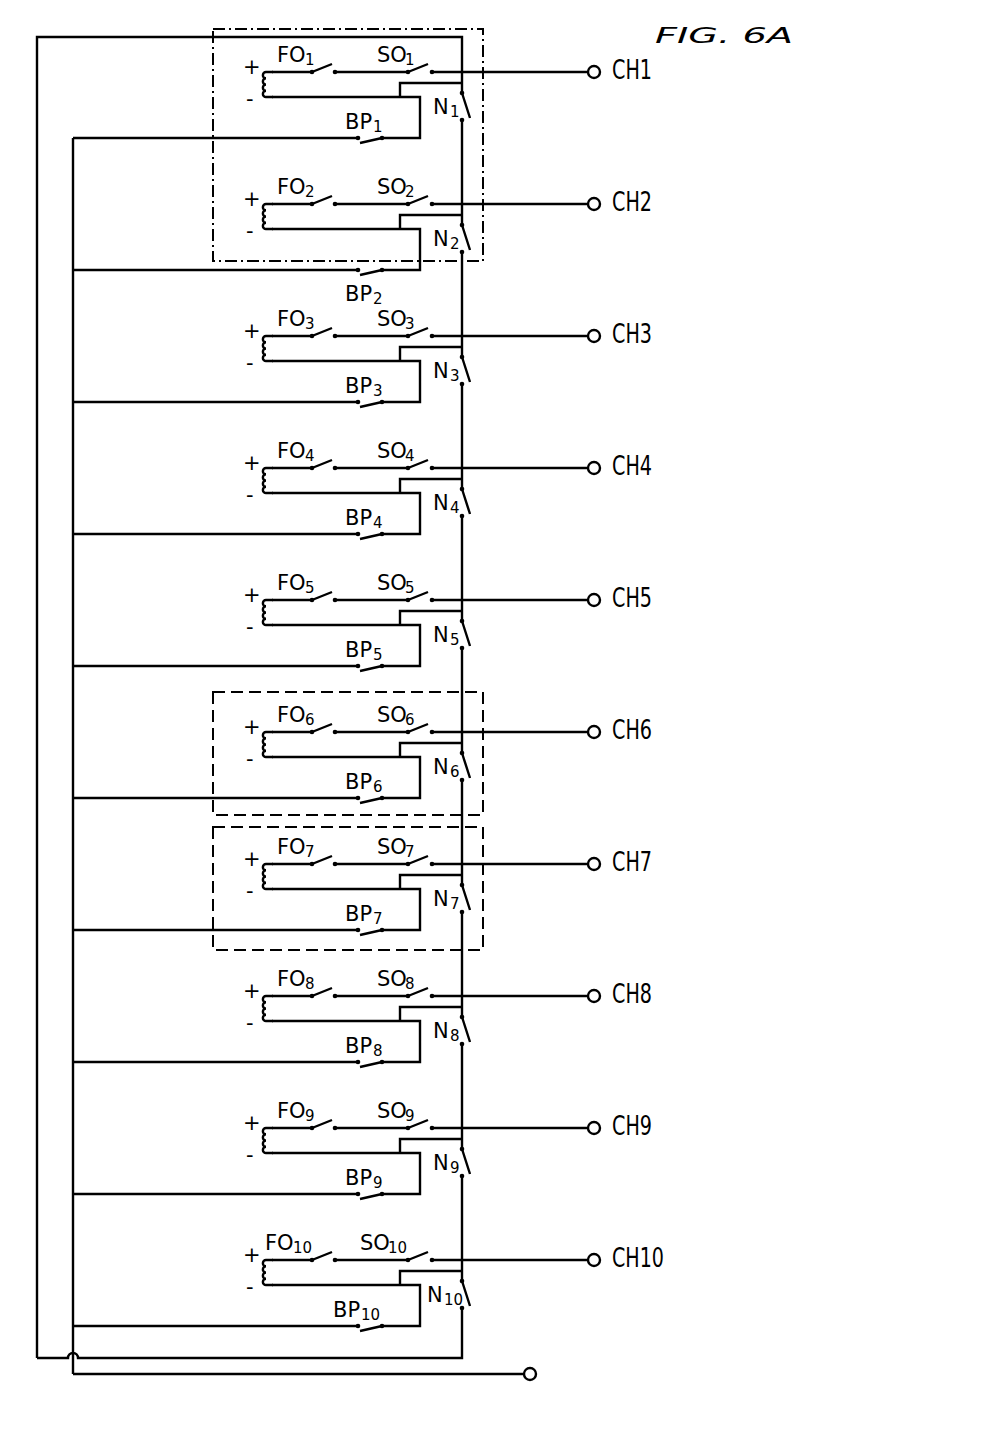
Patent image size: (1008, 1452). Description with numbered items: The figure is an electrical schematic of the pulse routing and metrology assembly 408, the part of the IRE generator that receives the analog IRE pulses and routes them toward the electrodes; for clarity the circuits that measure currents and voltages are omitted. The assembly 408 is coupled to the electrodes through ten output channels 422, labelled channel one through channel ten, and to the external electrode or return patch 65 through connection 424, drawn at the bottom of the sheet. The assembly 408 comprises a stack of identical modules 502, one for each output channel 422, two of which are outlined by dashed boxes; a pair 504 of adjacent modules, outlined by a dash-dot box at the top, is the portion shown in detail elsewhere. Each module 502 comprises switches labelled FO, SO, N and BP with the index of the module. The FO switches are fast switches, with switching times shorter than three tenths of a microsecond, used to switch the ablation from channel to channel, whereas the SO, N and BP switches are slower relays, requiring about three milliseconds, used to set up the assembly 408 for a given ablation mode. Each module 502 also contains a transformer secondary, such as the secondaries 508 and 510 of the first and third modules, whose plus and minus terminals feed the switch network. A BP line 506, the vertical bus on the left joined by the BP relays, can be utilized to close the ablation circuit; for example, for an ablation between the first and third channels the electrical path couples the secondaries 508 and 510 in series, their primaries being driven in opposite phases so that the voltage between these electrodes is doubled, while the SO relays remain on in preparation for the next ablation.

The pulse routing and metrology assembly 408 is at (720, 122).
The output channels 422 is at (540, 74).
The connection 424 is at (522, 1373).
The module 502 is at (483, 700).
The pair of adjacent modules 504 is at (223, 219).
The BP line 506 is at (73, 748).
The transformer secondary 508 is at (262, 90).
The transformer secondary 510 is at (260, 351).
The external electrode (return patch) 65 is at (750, 1386).